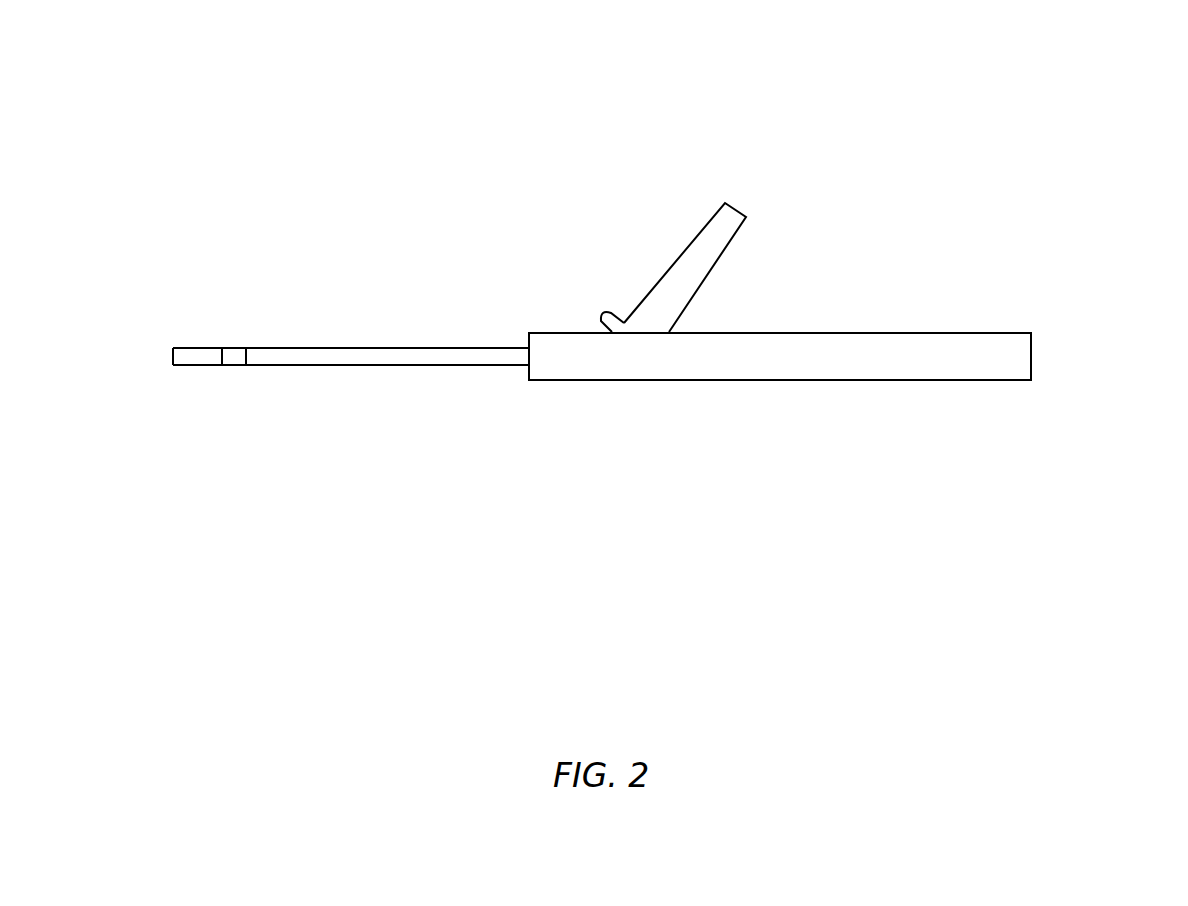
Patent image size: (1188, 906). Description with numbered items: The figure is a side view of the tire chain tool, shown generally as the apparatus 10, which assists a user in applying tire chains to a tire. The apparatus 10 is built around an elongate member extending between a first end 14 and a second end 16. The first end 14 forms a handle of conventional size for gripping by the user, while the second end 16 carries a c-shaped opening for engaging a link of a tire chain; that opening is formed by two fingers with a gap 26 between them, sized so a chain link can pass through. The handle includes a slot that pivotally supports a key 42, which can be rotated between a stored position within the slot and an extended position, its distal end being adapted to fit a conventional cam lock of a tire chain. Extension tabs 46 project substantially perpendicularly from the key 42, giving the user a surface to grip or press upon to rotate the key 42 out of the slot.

The apparatus 10 is at (572, 118).
The first end 14 is at (1031, 342).
The second end 16 is at (173, 352).
The gap 26 is at (235, 352).
The key 42 is at (698, 230).
The extension tabs 46 is at (603, 316).